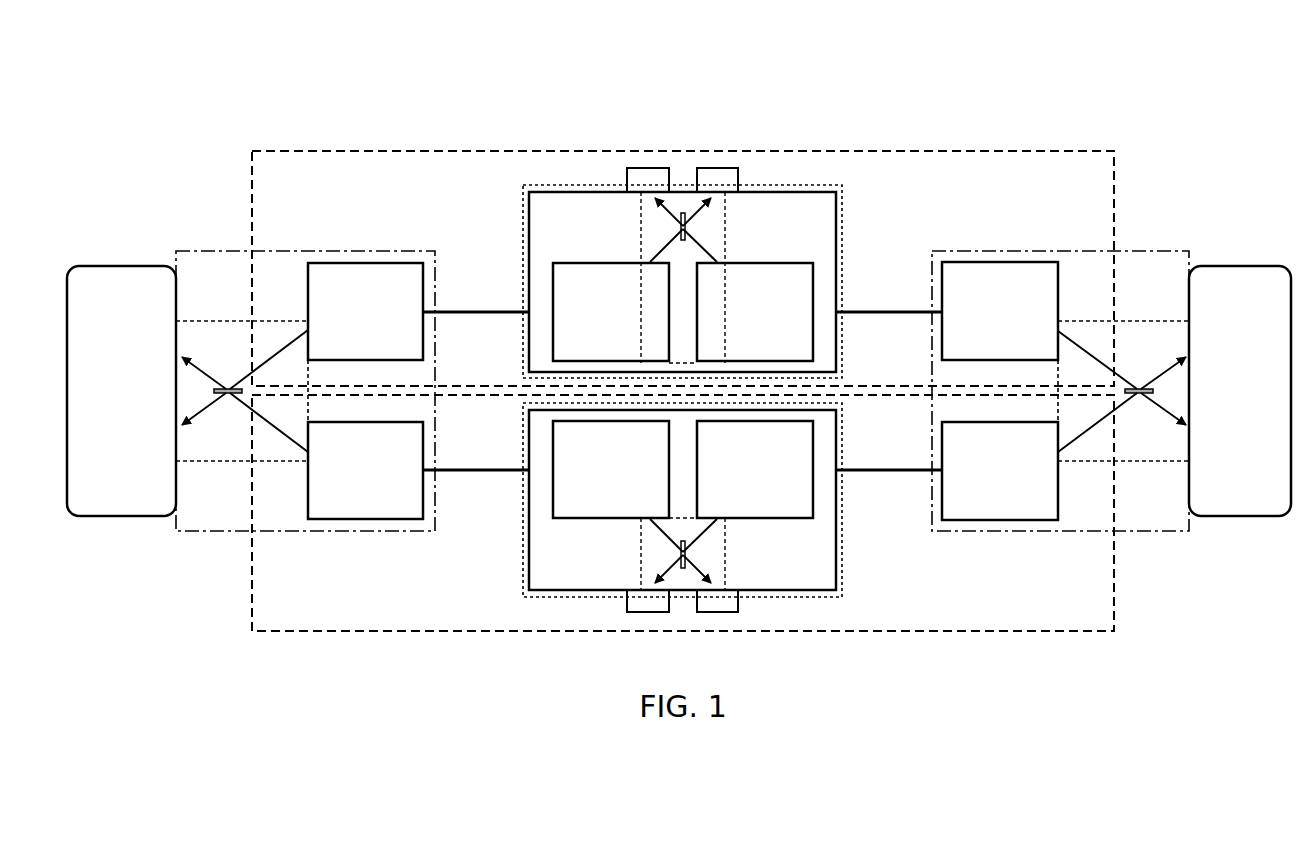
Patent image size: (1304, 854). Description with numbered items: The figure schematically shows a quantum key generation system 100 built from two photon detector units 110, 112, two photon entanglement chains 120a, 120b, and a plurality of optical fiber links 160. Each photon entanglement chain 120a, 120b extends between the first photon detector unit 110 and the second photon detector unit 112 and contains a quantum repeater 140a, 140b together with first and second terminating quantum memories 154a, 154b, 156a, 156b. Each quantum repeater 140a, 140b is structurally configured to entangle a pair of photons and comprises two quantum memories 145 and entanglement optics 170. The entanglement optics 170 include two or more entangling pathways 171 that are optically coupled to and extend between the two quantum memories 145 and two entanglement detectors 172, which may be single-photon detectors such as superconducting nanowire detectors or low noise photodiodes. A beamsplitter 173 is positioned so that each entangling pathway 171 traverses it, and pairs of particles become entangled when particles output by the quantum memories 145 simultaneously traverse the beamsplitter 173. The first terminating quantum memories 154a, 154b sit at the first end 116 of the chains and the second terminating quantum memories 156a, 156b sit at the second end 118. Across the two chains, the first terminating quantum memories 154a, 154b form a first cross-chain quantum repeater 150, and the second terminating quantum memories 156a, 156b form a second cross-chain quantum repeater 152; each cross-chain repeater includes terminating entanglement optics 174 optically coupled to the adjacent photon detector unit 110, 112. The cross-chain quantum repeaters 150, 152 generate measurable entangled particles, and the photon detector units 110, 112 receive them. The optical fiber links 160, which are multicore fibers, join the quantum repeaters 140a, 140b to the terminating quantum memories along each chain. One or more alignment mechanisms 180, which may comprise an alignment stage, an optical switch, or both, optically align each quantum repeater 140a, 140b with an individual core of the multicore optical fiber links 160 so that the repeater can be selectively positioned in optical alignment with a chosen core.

The quantum key generation system 100 is at (1138, 66).
The first photon detector unit 110 is at (122, 265).
The second photon detector unit 112 is at (1245, 265).
The first end of the photon entanglement chains 116 is at (168, 603).
The second end of the photon entanglement chains 118 is at (1196, 603).
The first photon entanglement chain 120a is at (358, 150).
The second photon entanglement chain 120b is at (353, 632).
The quantum repeater 140a is at (843, 206).
The quantum repeater 140b is at (843, 578).
The quantum memory 145 is at (683, 390).
The first cross-chain quantum repeater 150 is at (200, 250).
The second cross-chain quantum repeater 152 is at (1164, 250).
The first terminating quantum memory 154a is at (357, 262).
The first terminating quantum memory 154b is at (357, 520).
The second terminating quantum memory 156a is at (1008, 261).
The second terminating quantum memory 156b is at (1008, 521).
The optical fiber link 160 is at (471, 310).
The entanglement optics 170 is at (725, 222).
The entangling pathway 171 is at (298, 338).
The entanglement detector 172 is at (626, 180).
The beamsplitter 173 is at (673, 222).
The terminating entanglement optics 174 is at (263, 462).
The alignment mechanism 180 is at (522, 206).